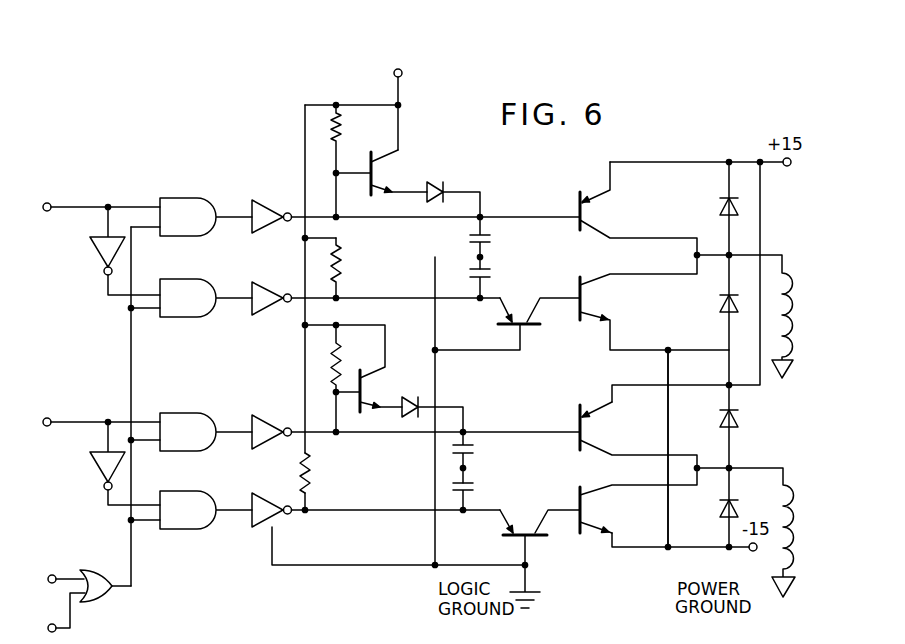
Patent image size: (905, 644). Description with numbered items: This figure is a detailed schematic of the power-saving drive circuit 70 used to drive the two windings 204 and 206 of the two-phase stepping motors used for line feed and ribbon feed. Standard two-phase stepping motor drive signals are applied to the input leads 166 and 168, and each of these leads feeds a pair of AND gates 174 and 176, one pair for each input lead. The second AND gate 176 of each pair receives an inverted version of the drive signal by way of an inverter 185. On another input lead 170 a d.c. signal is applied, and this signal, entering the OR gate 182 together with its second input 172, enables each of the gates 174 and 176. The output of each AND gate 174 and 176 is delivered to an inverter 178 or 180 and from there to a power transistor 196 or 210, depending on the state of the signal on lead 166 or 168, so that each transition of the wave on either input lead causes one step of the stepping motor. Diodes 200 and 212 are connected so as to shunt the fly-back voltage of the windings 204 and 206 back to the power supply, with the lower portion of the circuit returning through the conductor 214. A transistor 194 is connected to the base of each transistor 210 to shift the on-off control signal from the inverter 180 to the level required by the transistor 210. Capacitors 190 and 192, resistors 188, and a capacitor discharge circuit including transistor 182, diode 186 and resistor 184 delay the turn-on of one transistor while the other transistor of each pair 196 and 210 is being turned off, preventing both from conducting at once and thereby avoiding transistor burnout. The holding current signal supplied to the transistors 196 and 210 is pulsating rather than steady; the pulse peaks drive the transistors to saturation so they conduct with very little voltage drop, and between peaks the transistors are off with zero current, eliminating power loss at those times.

The drive circuit 70 is at (153, 163).
The input lead 166 is at (78, 207).
The input lead 168 is at (82, 421).
The input lead 170 is at (68, 576).
The OR gate input 172 is at (71, 612).
The AND gate 174 is at (196, 198).
The AND gate 176 is at (178, 280).
The inverter 178 is at (257, 200).
The inverter 180 is at (277, 296).
The transistor 182 is at (380, 170).
The resistor 184 is at (342, 137).
The inverter 185 is at (100, 256).
The diode 186 is at (432, 183).
The resistor 188 is at (341, 270).
The capacitor 190 is at (492, 240).
The capacitor 192 is at (492, 270).
The transistor 194 is at (518, 312).
The power transistor 196 is at (598, 205).
The diode 200 is at (719, 200).
The winding 204 is at (800, 305).
The winding 206 is at (800, 507).
The power transistor 210 is at (598, 298).
The diode 212 is at (722, 300).
The conductor 214 is at (668, 363).